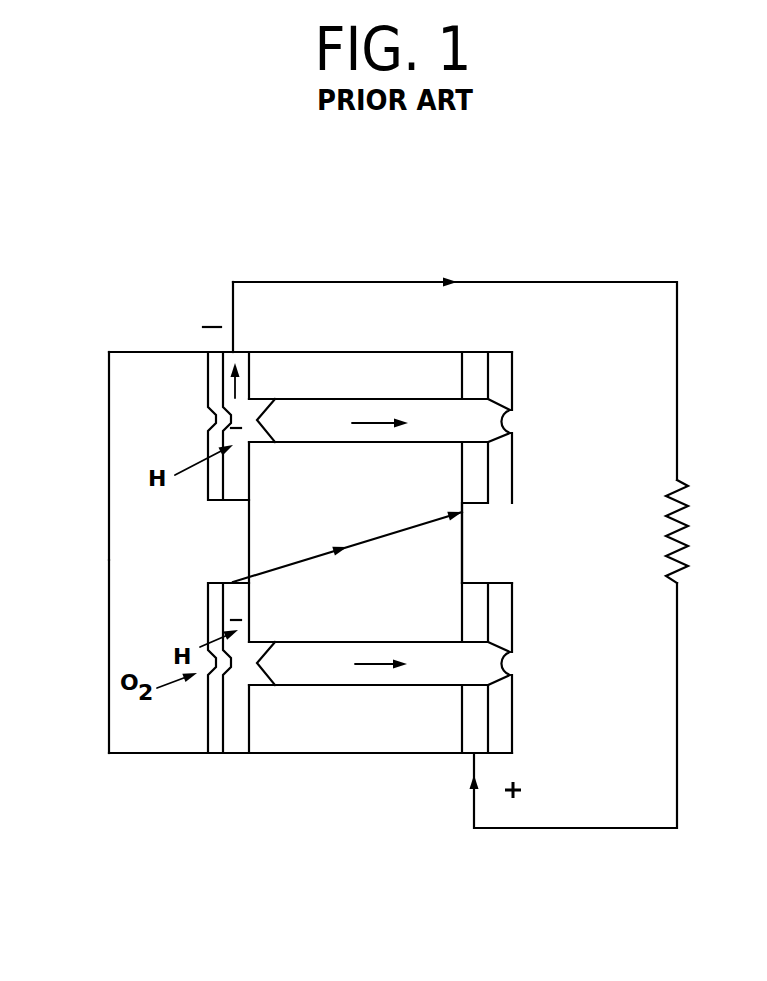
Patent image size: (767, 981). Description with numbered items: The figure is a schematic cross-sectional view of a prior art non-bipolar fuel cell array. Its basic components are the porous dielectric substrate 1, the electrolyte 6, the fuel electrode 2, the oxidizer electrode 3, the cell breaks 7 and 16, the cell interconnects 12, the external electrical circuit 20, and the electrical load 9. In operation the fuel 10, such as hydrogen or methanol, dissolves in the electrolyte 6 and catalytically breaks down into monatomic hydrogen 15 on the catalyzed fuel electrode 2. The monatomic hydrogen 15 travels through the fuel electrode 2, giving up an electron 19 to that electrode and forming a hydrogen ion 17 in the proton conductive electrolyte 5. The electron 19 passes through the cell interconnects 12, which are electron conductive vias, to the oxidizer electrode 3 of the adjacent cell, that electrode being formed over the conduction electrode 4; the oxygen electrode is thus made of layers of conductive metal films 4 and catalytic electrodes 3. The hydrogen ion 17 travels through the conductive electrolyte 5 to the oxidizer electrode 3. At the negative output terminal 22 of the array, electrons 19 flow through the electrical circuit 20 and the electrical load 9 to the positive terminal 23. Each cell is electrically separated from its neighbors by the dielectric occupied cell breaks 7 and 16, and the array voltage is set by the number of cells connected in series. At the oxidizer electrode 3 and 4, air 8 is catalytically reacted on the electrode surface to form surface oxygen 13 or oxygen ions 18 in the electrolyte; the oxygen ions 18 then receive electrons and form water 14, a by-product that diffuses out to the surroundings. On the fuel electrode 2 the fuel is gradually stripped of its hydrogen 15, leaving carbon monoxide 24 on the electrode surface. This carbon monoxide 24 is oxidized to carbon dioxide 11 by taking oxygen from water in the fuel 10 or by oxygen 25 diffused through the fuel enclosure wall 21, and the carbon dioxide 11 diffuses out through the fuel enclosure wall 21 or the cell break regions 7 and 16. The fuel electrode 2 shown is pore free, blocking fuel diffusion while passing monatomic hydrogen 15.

The porous dielectric substrate 1 is at (350, 753).
The fuel electrode 2 is at (228, 373).
The oxidizer electrode 3 is at (502, 720).
The conduction electrode 4 is at (478, 373).
The proton conductive electrolyte 5 is at (348, 407).
The electrolyte 6 is at (220, 400).
The cell break 7 is at (233, 538).
The air 8 is at (532, 417).
The electrical load 9 is at (688, 474).
The fuel 10 is at (148, 652).
The carbon dioxide 11 is at (165, 715).
The cell interconnects 12 is at (395, 551).
The surface oxygen 13 is at (525, 663).
The water 14 is at (512, 673).
The monatomic hydrogen 15 is at (153, 625).
The cell break 16 is at (492, 548).
The hydrogen ion 17 is at (303, 683).
The oxygen ions 18 is at (456, 674).
The electron 19 is at (254, 399).
The external electrical circuit 20 is at (573, 283).
The fuel enclosure wall 21 is at (109, 458).
The negative output terminal 22 is at (204, 302).
The positive terminal 23 is at (497, 813).
The carbon monoxide 24 is at (143, 579).
The oxygen 25 is at (107, 680).